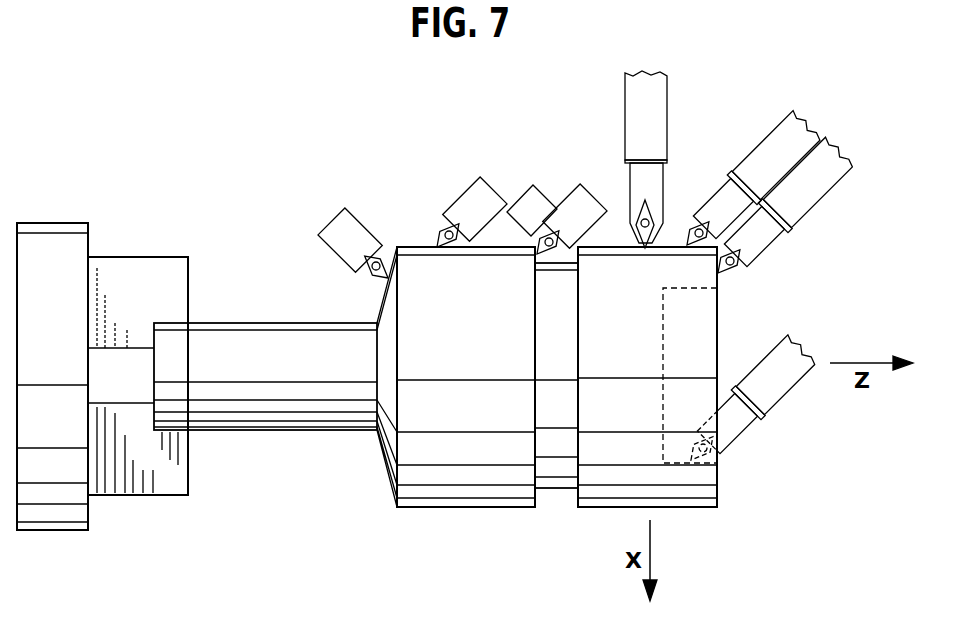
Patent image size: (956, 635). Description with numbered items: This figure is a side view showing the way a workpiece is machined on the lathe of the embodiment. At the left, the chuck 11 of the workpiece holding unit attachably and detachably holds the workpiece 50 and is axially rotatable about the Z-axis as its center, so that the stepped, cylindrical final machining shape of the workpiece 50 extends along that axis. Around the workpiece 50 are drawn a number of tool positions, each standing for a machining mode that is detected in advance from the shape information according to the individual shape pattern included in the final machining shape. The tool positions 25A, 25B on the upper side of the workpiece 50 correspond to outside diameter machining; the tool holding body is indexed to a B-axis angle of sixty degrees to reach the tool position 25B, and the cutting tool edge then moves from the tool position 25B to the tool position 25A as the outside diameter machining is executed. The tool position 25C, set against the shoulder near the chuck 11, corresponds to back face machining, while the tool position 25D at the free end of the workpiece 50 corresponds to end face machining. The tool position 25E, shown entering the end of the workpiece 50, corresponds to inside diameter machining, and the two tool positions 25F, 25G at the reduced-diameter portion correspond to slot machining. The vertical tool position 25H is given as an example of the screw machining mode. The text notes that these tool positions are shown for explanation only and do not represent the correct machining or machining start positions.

The chuck 11 is at (143, 497).
The workpiece 50 is at (720, 493).
The tool position 25A is at (457, 192).
The tool position 25B is at (768, 130).
The tool position 25C is at (358, 213).
The tool position 25D is at (830, 198).
The tool position 25E is at (785, 400).
The tool position 25F is at (528, 188).
The tool position 25G is at (602, 188).
The tool position 25H is at (668, 118).